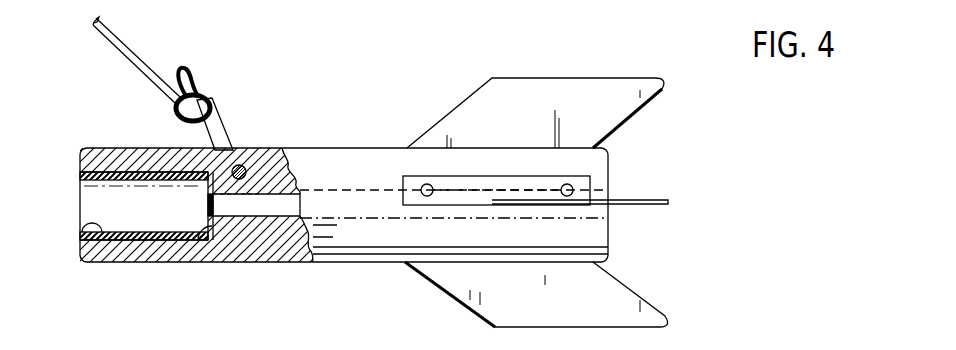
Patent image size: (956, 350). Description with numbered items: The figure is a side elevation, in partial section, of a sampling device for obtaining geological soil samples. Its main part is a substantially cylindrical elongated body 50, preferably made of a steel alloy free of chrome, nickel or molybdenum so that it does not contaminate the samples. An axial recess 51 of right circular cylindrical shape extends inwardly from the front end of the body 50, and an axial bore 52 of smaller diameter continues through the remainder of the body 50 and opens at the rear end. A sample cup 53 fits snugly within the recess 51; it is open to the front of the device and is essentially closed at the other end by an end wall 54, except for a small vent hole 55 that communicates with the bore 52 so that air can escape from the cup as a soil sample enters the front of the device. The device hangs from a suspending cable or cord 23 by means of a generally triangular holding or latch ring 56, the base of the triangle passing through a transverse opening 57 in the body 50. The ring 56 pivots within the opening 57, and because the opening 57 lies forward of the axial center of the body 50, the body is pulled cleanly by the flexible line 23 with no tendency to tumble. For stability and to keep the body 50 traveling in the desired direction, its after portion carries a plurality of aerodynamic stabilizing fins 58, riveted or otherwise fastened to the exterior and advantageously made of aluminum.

The suspending cable 23 is at (140, 66).
The elongated body 50 is at (357, 168).
The axial recess 51 is at (94, 224).
The axial bore 52 is at (300, 192).
The sample cup 53 is at (90, 183).
The end wall 54 is at (206, 224).
The vent hole 55 is at (208, 202).
The latch ring 56 is at (221, 126).
The transverse opening 57 is at (248, 156).
The stabilizing fins 58 is at (645, 198).